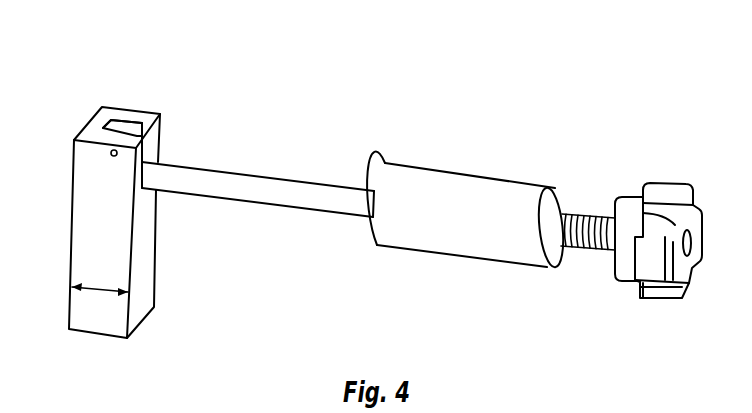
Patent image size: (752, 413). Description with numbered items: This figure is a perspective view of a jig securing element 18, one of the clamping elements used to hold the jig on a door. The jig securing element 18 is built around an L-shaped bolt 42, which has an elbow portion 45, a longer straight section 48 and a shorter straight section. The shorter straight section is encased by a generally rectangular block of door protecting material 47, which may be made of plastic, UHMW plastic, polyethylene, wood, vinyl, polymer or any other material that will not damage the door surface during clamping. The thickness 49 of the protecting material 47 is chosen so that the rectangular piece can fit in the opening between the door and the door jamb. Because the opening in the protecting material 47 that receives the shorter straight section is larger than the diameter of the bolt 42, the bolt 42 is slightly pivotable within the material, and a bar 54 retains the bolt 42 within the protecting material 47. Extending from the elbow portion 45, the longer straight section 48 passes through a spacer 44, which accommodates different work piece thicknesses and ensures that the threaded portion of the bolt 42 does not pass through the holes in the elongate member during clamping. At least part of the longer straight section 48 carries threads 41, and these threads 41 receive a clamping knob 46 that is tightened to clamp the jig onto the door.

The jig securing element 18 is at (333, 118).
The threads 41 is at (588, 212).
The L-shaped bolt 42 is at (230, 192).
The spacer 44 is at (475, 172).
The elbow portion 45 is at (146, 160).
The clamping knob 46 is at (670, 185).
The door protecting material 47 is at (88, 207).
The longer straight section 48 is at (357, 205).
The thickness 49 is at (100, 288).
The bar 54 is at (158, 115).